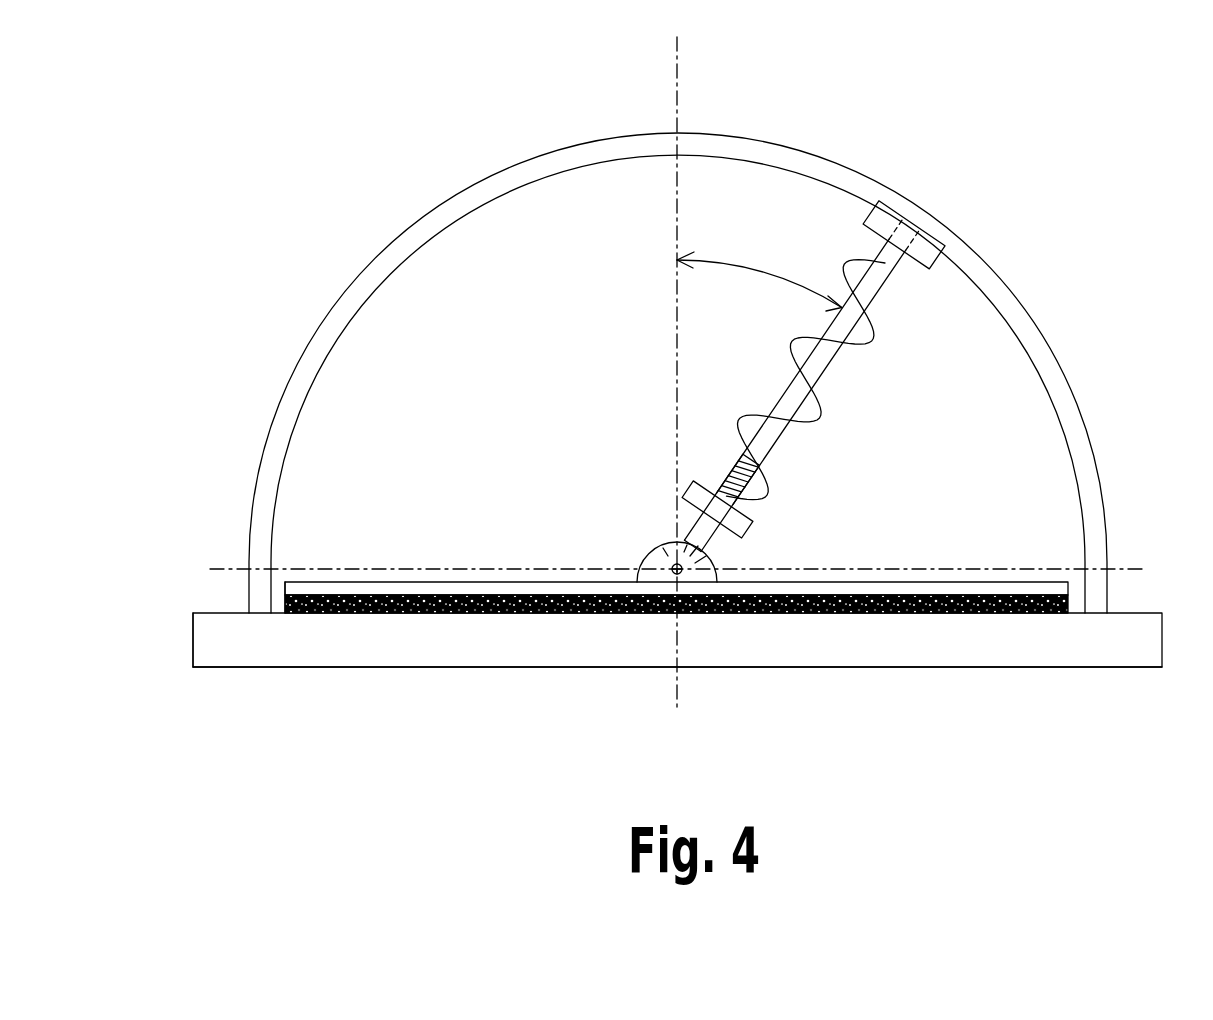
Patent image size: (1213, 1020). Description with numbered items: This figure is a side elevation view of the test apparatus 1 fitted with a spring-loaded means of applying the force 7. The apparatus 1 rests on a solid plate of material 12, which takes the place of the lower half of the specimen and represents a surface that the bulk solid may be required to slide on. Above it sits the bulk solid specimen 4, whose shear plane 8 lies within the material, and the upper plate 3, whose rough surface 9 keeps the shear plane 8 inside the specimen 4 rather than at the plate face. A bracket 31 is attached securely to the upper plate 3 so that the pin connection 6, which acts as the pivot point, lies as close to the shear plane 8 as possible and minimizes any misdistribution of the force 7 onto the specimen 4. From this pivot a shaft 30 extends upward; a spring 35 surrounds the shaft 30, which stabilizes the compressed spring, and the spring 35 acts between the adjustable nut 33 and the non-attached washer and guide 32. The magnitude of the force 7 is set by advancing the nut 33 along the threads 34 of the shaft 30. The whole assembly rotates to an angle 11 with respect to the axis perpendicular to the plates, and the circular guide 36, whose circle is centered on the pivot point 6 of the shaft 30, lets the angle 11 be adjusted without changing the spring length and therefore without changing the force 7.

The test apparatus 1 is at (446, 702).
The upper plate 3 is at (1020, 587).
The bulk solid specimen 4 is at (1070, 603).
The pin connection 6 is at (677, 569).
The applied force 7 is at (677, 569).
The shear plane 8 is at (228, 617).
The plate surface 9 is at (367, 595).
The angle 11 is at (759, 276).
The solid plate of material 12 is at (1023, 637).
The shaft 30 is at (880, 280).
The bracket 31 is at (677, 569).
The washer and guide 32 is at (925, 255).
The adjustable nut 33 is at (677, 569).
The threads 34 is at (736, 482).
The spring 35 is at (855, 253).
The circular guide 36 is at (1020, 323).